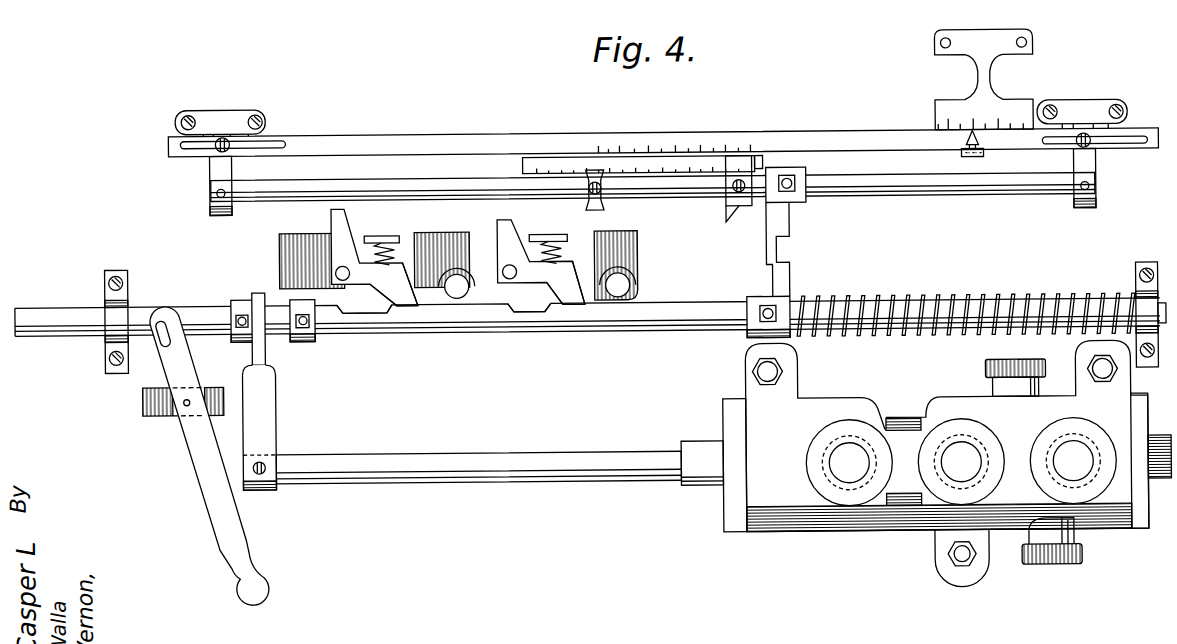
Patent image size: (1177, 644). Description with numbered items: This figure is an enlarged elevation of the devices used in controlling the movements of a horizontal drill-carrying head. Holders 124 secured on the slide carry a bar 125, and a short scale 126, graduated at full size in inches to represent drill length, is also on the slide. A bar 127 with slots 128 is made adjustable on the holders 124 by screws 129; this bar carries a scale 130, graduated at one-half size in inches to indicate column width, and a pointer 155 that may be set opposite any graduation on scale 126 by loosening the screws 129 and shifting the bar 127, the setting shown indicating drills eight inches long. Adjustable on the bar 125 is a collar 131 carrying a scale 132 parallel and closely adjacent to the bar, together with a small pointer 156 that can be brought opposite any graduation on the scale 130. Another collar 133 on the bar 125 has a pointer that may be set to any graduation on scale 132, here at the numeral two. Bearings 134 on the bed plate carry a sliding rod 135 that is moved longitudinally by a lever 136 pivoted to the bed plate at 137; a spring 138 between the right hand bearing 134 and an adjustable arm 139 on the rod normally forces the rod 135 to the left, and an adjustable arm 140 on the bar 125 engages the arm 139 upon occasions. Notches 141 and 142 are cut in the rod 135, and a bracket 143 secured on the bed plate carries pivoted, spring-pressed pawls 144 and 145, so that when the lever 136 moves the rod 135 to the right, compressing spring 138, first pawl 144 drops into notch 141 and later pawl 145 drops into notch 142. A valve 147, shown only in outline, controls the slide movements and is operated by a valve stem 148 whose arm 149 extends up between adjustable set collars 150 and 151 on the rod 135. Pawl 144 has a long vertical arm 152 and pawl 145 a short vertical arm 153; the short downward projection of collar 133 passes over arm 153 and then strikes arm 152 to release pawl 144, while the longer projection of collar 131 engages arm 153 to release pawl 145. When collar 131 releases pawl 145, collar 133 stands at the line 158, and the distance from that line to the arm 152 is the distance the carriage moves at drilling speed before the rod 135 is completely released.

The holders 124 is at (215, 107).
The bar 125 is at (1017, 194).
The short scale 126 is at (965, 99).
The bar 127 is at (400, 133).
The slots 128 is at (272, 139).
The screws 129 is at (226, 149).
The scale 130 is at (712, 137).
The collar 131 is at (727, 178).
The scale 132 is at (570, 157).
The collar 133 is at (604, 201).
The bearings 134 is at (104, 288).
The sliding rod 135 is at (656, 332).
The lever 136 is at (193, 447).
The pivot 137 is at (182, 404).
The spring 138 is at (930, 298).
The adjustable arm 139 is at (790, 283).
The adjustable arm 140 is at (790, 210).
The notch 141 is at (367, 313).
The notch 142 is at (527, 313).
The bracket 143 is at (640, 262).
The pawl 144 is at (400, 292).
The pawl 145 is at (570, 292).
The valve 147 is at (803, 526).
The valve stem 148 is at (567, 470).
The arm 149 is at (268, 426).
The set collar 150 is at (240, 297).
The set collar 151 is at (304, 340).
The long vertical arm 152 is at (332, 214).
The short vertical arm 153 is at (512, 222).
The pointer 155 is at (968, 140).
The small pointer 156 is at (767, 157).
The line 158 is at (397, 233).